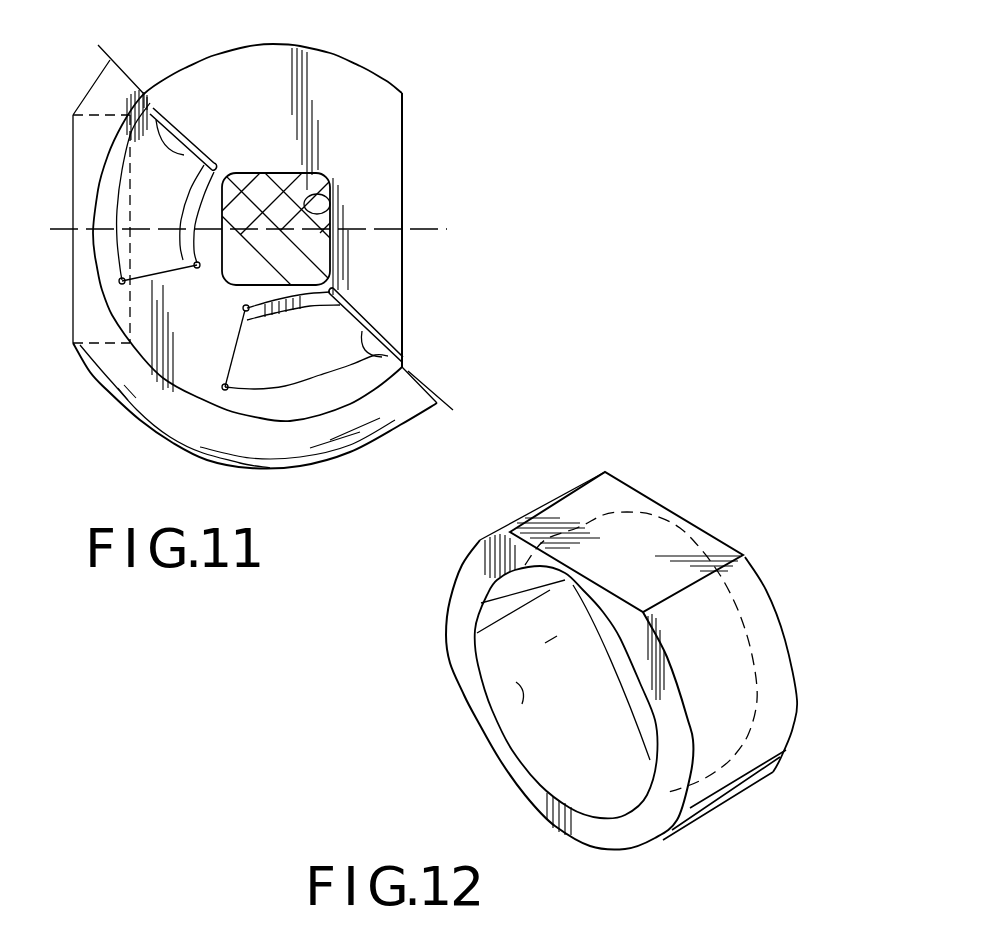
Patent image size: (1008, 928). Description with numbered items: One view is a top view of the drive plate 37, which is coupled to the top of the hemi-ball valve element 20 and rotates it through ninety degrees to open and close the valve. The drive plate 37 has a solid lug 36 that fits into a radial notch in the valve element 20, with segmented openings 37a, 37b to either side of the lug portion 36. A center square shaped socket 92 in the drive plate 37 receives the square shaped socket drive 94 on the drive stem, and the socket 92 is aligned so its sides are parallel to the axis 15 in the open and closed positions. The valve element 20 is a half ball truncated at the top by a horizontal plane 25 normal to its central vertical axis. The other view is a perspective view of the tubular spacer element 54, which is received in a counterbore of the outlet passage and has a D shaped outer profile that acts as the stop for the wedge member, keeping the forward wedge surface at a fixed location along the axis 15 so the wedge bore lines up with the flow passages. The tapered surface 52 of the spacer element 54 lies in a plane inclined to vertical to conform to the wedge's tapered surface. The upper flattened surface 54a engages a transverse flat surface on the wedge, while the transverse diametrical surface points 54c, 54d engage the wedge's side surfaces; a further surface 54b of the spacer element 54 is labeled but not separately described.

In FIG. 11, the axis 15 is at (423, 231).
In FIG. 11, the valve element 20 is at (343, 472).
In FIG. 11, the horizontal plane 25 is at (157, 177).
In FIG. 11, the lug 36 is at (180, 365).
In FIG. 11, the drive plate 37 is at (410, 99).
In FIG. 11, the segmented opening 37a is at (392, 360).
In FIG. 11, the segmented opening 37b is at (152, 105).
In FIG. 11, the square shaped socket 92 is at (306, 199).
In FIG. 11, the square shaped socket drive 94 is at (262, 190).
In FIG. 12, the tapered surface 52 is at (440, 623).
In FIG. 12, the tubular spacer element 54 is at (718, 613).
In FIG. 12, the upper flattened surface 54a is at (637, 545).
In FIG. 12, the inner surface 54b is at (515, 684).
In FIG. 12, the transverse diametrical surface point 54c is at (463, 672).
In FIG. 12, the transverse diametrical surface point 54d is at (745, 788).